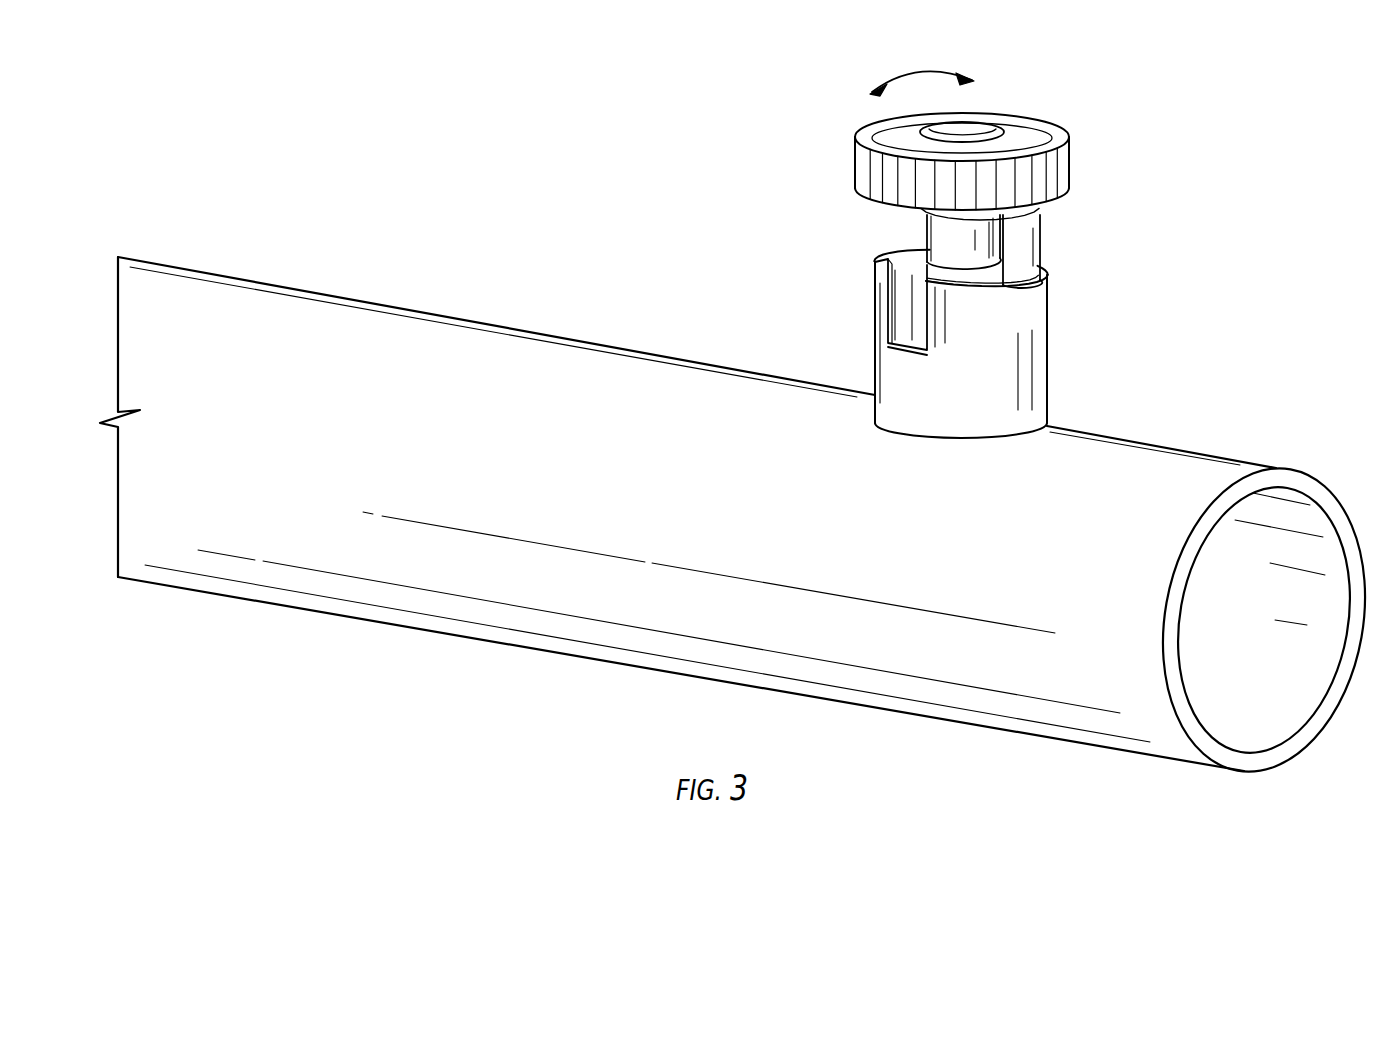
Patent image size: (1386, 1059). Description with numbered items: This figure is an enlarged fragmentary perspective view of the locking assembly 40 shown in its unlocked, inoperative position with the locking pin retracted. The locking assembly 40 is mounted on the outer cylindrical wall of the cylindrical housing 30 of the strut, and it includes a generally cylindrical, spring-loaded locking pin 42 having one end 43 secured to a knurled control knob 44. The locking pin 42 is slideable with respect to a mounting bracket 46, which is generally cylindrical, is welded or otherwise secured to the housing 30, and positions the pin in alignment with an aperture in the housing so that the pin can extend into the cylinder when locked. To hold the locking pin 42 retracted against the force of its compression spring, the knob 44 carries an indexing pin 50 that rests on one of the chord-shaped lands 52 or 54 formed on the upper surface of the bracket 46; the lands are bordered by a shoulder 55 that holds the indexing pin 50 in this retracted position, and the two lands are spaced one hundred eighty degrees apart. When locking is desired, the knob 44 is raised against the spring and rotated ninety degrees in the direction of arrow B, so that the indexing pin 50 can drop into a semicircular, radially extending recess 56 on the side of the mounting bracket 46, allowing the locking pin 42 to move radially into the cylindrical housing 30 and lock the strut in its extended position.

The cylindrical housing 30 is at (1145, 440).
The locking assembly 40 is at (1118, 157).
The locking pin 42 is at (923, 228).
The end of locking pin 43 is at (968, 135).
The knurled control knob 44 is at (860, 162).
The mounting bracket 46 is at (1048, 343).
The indexing pin 50 is at (1035, 248).
The chord-shaped land 52 is at (872, 272).
The chord-shaped land 54 is at (992, 287).
The shoulder 55 is at (888, 259).
The semicircular radially extending recess 56 is at (900, 310).
The arrow indicating knob rotation B is at (917, 73).